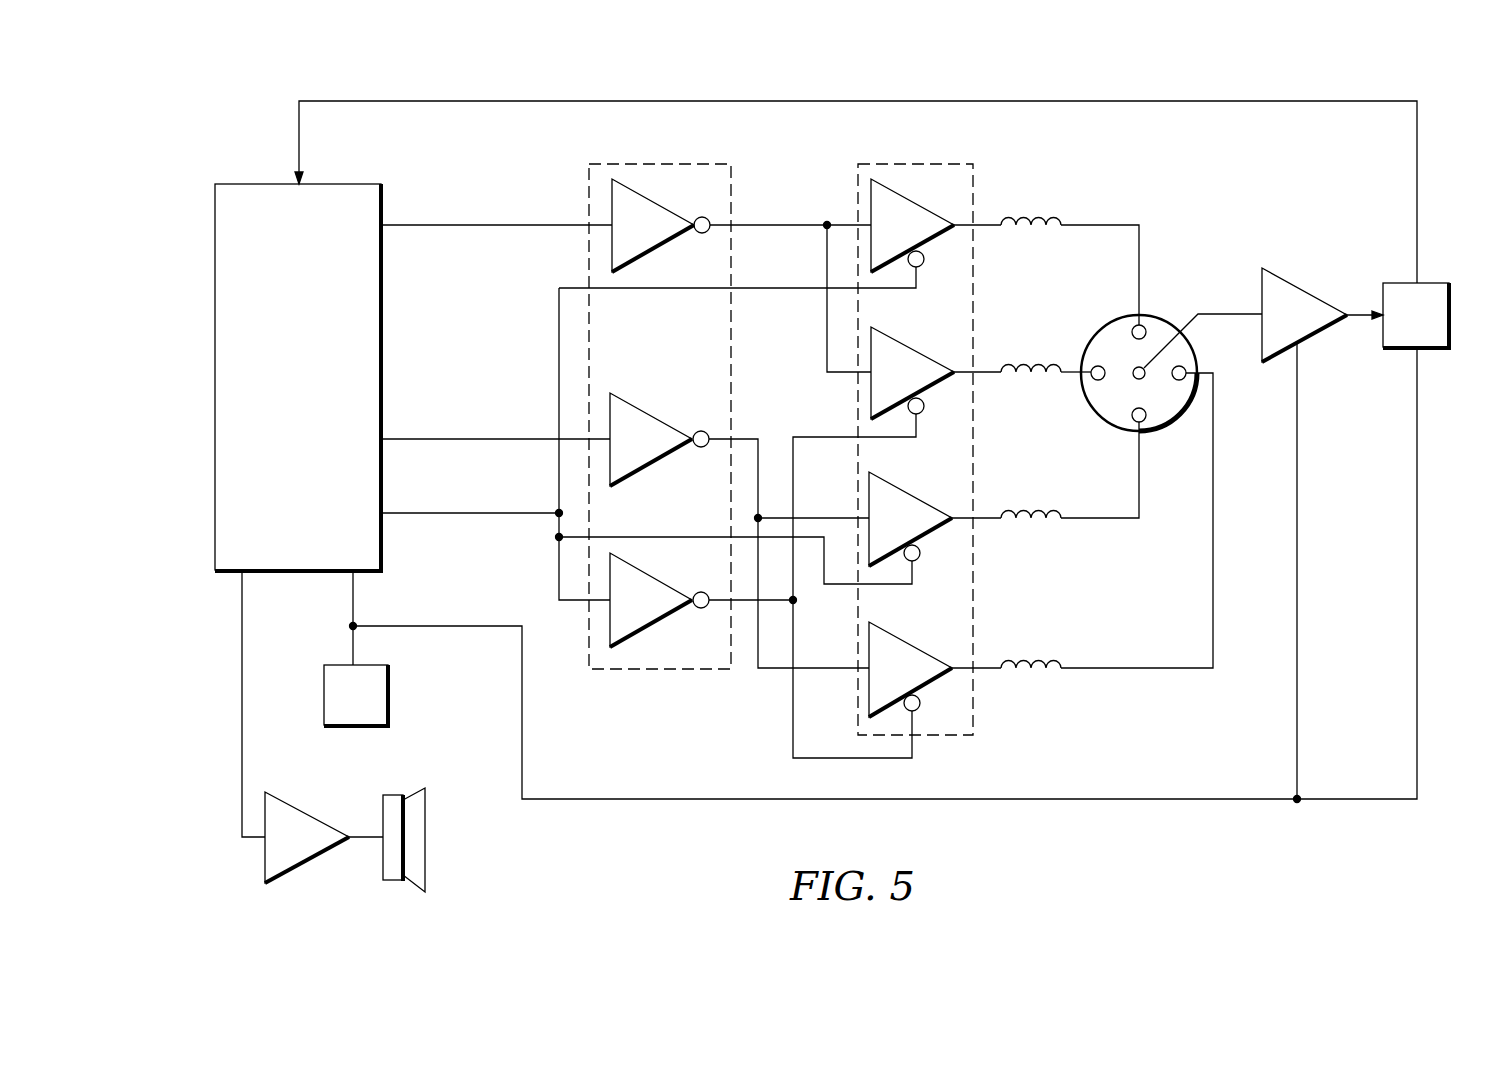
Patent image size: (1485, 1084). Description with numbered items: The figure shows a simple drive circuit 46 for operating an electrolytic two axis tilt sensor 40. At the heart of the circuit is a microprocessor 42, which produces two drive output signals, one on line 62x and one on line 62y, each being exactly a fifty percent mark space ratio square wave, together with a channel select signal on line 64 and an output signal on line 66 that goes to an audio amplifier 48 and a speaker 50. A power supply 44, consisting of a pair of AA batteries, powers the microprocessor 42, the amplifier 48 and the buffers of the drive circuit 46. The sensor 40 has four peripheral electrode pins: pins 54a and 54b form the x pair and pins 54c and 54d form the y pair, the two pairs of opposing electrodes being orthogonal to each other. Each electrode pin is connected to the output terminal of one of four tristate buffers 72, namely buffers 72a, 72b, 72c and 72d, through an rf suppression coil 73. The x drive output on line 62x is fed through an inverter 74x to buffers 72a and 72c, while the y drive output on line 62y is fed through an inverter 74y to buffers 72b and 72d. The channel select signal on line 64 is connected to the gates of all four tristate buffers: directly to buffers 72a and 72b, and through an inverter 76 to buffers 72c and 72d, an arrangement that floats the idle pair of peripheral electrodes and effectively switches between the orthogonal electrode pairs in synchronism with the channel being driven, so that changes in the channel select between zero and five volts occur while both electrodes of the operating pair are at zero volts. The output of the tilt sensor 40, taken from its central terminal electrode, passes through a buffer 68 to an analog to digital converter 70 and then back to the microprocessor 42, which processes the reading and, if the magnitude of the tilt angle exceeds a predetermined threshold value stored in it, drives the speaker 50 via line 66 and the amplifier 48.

The tilt sensor 40 is at (1156, 317).
The microprocessor 42 is at (255, 184).
The power supply 44 is at (390, 678).
The drive circuit 46 is at (466, 80).
The audio amplifier 48 is at (299, 810).
The speaker 50 is at (390, 794).
The electrode pin 54a is at (1134, 325).
The electrode pin 54b is at (1133, 421).
The electrode pin 54c is at (1093, 380).
The electrode pin 54d is at (1186, 367).
The line 62x is at (547, 224).
The line 62y is at (547, 439).
The line 64 is at (543, 514).
The line 66 is at (244, 634).
The buffer 68 is at (1294, 289).
The analog to digital converter 70 is at (1427, 288).
The tristate buffers 72 is at (923, 172).
The tristate buffer 72a is at (900, 200).
The tristate buffer 72b is at (900, 494).
The tristate buffer 72c is at (900, 348).
The tristate buffer 72d is at (900, 641).
The rf suppression coil 73 is at (1039, 222).
The inverter 74x is at (644, 200).
The inverter 74y is at (644, 414).
The inverter 76 is at (644, 575).